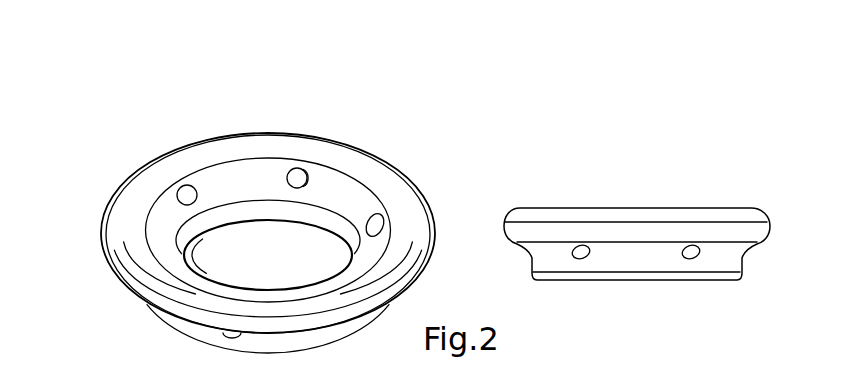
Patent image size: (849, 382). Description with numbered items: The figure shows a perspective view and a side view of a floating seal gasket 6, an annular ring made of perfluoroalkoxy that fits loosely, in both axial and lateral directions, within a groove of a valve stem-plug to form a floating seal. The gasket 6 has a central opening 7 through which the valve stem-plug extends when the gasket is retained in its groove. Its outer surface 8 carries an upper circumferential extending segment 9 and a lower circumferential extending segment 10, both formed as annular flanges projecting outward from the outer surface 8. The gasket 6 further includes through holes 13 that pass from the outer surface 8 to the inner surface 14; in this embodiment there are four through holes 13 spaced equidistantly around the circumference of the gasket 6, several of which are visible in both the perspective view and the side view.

The floating seal gasket 6 is at (263, 92).
The central opening 7 is at (252, 257).
The outer surface 8 is at (650, 257).
The upper circumferential extending segment 9 is at (771, 231).
The lower circumferential extending segment 10 is at (738, 279).
The through holes 13 is at (187, 193).
The inner surface 14 is at (338, 197).